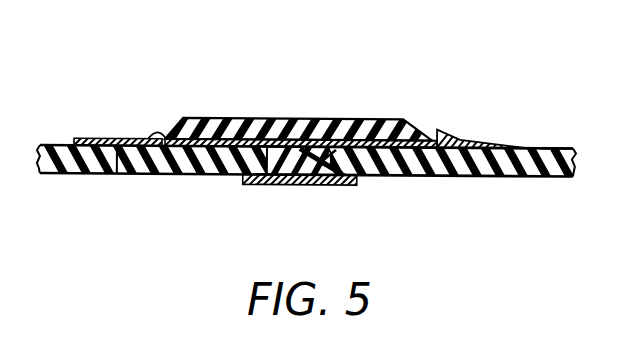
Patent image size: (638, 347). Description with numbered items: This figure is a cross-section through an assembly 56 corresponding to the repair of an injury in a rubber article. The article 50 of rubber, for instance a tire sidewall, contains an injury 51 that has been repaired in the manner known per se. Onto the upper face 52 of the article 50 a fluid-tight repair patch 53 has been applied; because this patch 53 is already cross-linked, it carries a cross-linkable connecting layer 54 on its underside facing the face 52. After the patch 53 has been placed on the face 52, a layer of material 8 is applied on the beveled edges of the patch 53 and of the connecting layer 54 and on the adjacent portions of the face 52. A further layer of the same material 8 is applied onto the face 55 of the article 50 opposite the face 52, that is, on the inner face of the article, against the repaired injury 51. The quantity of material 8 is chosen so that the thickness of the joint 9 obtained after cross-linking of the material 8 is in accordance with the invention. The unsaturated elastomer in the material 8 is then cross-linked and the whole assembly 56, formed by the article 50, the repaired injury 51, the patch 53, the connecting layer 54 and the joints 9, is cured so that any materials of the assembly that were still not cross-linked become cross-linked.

The material 8 is at (117, 143).
The joint 9 is at (482, 142).
The article 50 is at (558, 151).
The injury 51 is at (370, 176).
The upper face 52 is at (117, 174).
The repair patch 53 is at (323, 117).
The connecting layer 54 is at (243, 138).
The face 55 is at (190, 177).
The assembly 56 is at (176, 104).